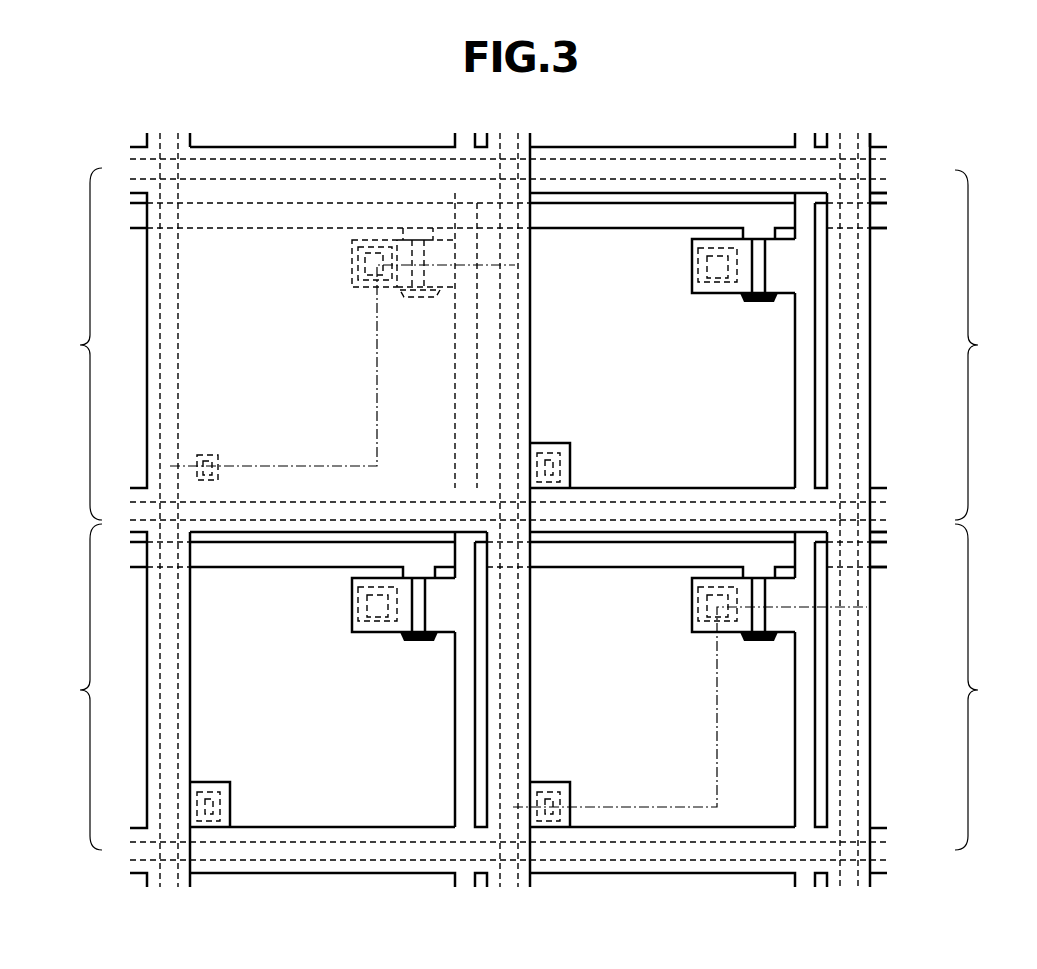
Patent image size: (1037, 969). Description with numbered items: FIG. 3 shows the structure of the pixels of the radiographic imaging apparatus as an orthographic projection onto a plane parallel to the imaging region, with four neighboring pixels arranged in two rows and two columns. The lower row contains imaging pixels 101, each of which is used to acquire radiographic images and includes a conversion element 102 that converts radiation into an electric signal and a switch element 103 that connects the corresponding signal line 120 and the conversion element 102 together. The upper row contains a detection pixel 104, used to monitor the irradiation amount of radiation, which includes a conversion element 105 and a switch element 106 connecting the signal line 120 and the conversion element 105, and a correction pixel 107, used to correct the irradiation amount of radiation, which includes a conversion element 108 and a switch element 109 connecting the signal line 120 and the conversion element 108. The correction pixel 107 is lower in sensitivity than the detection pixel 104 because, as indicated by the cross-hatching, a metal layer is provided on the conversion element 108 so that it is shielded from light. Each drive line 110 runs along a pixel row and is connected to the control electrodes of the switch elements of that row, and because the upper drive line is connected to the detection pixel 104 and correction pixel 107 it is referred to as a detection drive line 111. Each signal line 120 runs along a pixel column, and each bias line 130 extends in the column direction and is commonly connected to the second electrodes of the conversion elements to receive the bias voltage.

The imaging pixel 101 is at (525, 687).
The conversion element 102 is at (840, 701).
The switch element 103 is at (662, 637).
The detection pixel 104 is at (773, 303).
The conversion element 105 is at (842, 362).
The switch element 106 is at (662, 202).
The correction pixel 107 is at (295, 306).
The conversion element 108 is at (285, 178).
The switch element 109 is at (420, 240).
The drive line 110 is at (888, 541).
The detection drive line 111 is at (880, 207).
The signal line 120 is at (809, 287).
The bias line 130 is at (624, 147).